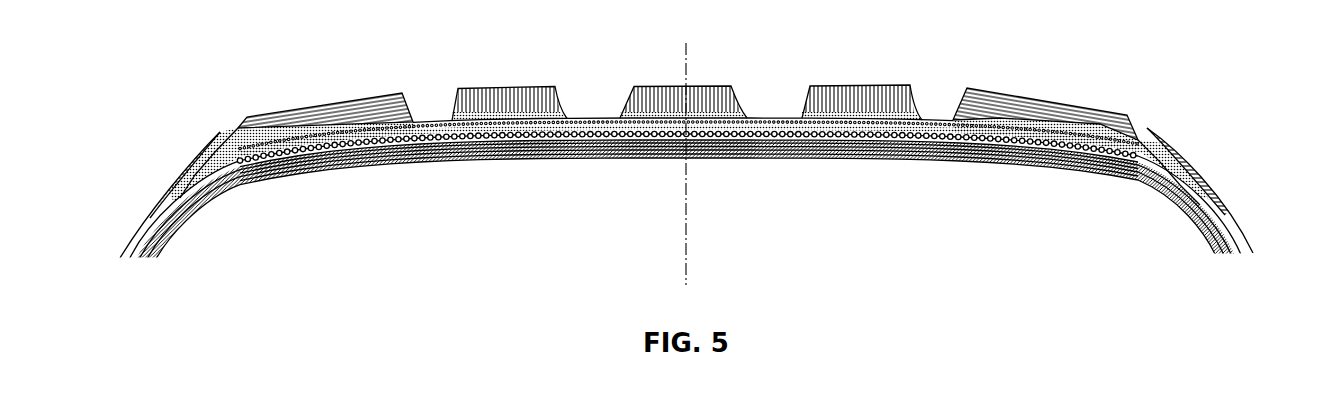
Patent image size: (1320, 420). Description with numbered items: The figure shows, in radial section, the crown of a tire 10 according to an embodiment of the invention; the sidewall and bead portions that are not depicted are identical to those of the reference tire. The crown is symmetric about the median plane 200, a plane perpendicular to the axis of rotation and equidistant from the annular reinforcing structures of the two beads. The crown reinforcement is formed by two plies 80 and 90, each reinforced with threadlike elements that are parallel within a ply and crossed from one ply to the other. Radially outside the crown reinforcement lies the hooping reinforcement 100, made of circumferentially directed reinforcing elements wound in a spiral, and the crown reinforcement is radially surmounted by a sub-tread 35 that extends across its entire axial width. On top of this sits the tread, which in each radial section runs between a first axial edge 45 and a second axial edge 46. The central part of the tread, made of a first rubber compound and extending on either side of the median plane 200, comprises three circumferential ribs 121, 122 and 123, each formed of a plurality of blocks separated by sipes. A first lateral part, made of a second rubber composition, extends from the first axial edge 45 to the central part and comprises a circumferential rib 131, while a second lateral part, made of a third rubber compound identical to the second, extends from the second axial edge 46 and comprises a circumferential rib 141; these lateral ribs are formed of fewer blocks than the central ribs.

The tire 10 is at (1250, 135).
The sub-tread 35 is at (832, 117).
The first axial edge 45 is at (205, 131).
The second axial edge 46 is at (1160, 123).
The ply 80 is at (617, 153).
The ply 90 is at (548, 153).
The hooping reinforcement 100 is at (412, 122).
The circumferential rib 121 is at (515, 105).
The circumferential rib 122 is at (668, 98).
The circumferential rib 123 is at (847, 95).
The circumferential rib 131 is at (345, 115).
The circumferential rib 141 is at (1059, 110).
The median plane 200 is at (688, 199).